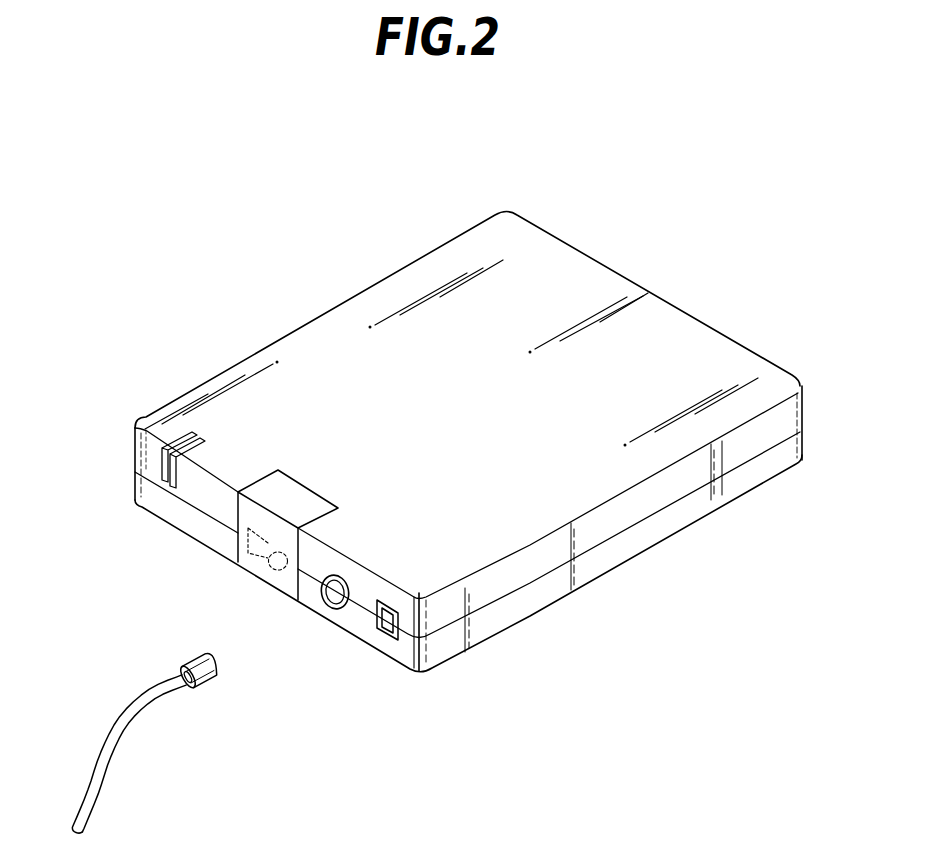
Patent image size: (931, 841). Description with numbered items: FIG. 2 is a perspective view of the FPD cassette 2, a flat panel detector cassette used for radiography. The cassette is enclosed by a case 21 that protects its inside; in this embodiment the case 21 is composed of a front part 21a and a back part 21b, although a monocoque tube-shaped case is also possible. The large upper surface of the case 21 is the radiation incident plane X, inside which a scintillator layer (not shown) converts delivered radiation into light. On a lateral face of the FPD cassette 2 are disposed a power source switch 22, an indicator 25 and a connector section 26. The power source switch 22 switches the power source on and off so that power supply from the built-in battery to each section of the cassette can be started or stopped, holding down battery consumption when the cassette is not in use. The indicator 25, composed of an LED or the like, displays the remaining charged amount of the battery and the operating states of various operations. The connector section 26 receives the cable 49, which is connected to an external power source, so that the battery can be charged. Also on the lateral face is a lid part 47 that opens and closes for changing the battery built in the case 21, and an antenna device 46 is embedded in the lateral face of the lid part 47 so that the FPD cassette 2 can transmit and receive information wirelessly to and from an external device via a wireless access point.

The FPD cassette 2 is at (428, 188).
The case 21 is at (597, 247).
The front part 21a is at (735, 447).
The back part 21b is at (612, 556).
The indicator 25 is at (163, 482).
The lid part 47 is at (244, 584).
The antenna device 46 is at (272, 582).
The connector section 26 is at (337, 591).
The power source switch 22 is at (388, 633).
The cable 49 is at (140, 709).
The radiation incident plane X is at (318, 372).